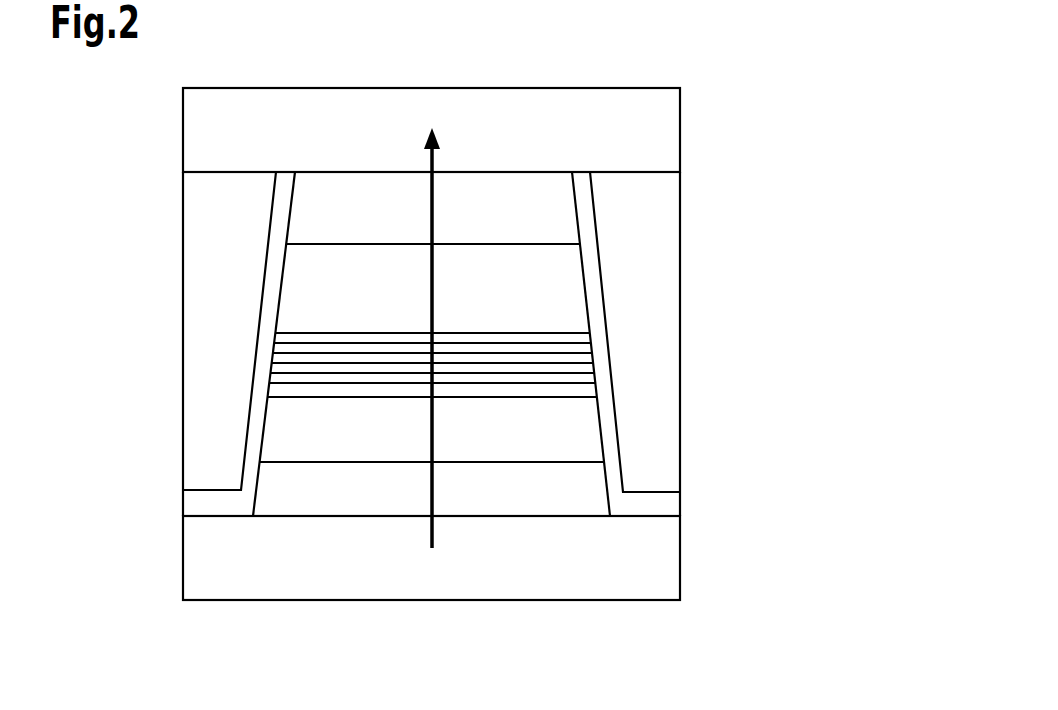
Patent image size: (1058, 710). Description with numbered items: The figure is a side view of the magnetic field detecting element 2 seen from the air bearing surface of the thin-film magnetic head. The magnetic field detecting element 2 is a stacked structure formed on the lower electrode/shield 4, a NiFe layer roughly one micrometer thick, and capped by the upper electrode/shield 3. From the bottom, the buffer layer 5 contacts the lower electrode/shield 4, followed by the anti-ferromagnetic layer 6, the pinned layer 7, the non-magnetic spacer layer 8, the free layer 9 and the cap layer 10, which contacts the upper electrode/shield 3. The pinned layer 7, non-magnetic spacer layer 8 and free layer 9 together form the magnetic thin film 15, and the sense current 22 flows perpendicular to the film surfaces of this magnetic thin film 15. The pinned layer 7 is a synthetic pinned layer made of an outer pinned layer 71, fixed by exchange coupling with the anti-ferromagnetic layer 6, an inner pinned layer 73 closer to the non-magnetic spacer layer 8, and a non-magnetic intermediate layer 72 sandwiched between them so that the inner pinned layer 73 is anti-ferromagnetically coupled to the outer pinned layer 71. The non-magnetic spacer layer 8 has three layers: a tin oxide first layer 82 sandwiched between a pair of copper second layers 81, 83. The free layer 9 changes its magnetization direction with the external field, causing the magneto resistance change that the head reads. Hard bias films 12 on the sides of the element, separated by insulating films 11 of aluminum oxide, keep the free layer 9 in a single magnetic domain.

The magnetic field detecting element 2 is at (880, 190).
The upper electrode/shield 3 is at (680, 130).
The lower electrode/shield 4 is at (680, 555).
The buffer layer 5 is at (610, 477).
The anti-ferromagnetic layer 6 is at (602, 427).
The pinned layer 7 is at (750, 383).
The outer pinned layer 71 is at (604, 395).
The non-magnetic intermediate layer 72 is at (604, 383).
The inner pinned layer 73 is at (603, 370).
The non-magnetic spacer layer 8 is at (750, 310).
The second layer 81 is at (600, 357).
The first layer 82 is at (596, 345).
The second layer 83 is at (592, 333).
The free layer 9 is at (585, 285).
The cap layer 10 is at (577, 205).
The insulating film 11 is at (183, 507).
The hard bias film 12 is at (183, 345).
The magnetic thin film 15 is at (797, 275).
The sense current 22 is at (436, 205).